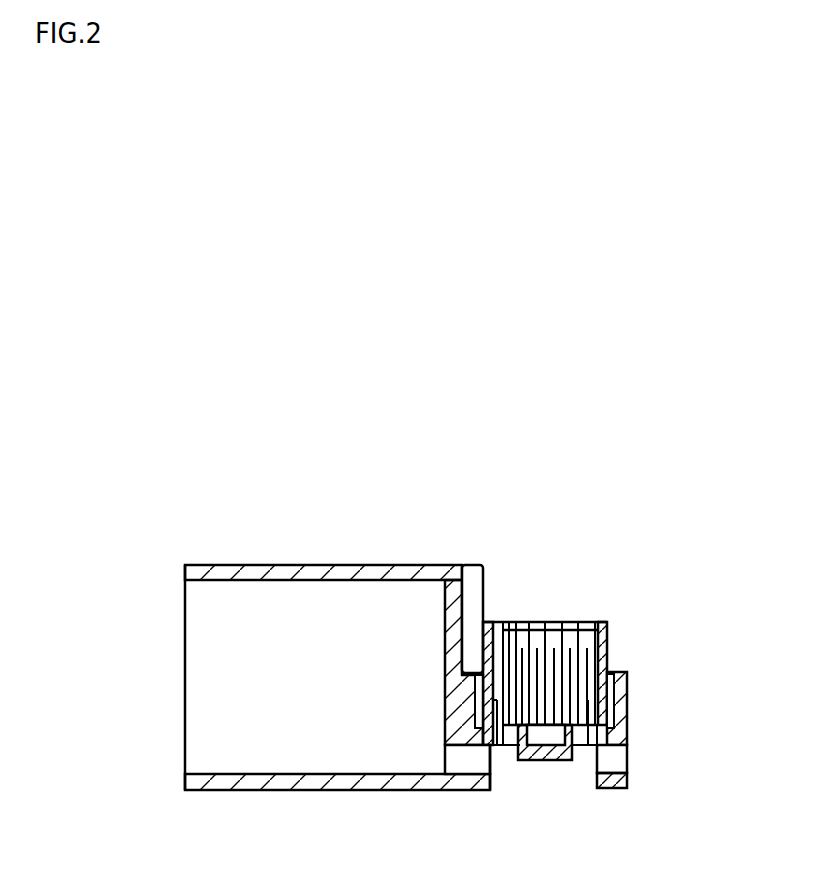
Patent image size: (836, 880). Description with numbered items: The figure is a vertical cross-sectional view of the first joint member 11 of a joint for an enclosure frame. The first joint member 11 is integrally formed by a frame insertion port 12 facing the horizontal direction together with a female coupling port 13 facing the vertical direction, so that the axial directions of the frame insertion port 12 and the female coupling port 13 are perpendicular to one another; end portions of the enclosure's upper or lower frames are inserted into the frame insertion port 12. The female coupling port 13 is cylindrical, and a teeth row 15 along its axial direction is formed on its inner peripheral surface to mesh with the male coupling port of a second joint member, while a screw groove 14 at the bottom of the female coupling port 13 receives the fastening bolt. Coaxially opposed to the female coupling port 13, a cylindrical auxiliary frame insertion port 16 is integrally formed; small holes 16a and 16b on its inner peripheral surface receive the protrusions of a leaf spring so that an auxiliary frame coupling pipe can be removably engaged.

The first joint member 11 is at (581, 642).
The frame insertion port 12 is at (243, 565).
The female coupling port 13 is at (607, 643).
The screw groove 14 is at (548, 738).
The teeth row 15 is at (558, 663).
The auxiliary frame insertion port 16 is at (592, 776).
The small hole 16a is at (467, 760).
The small hole 16b is at (618, 760).